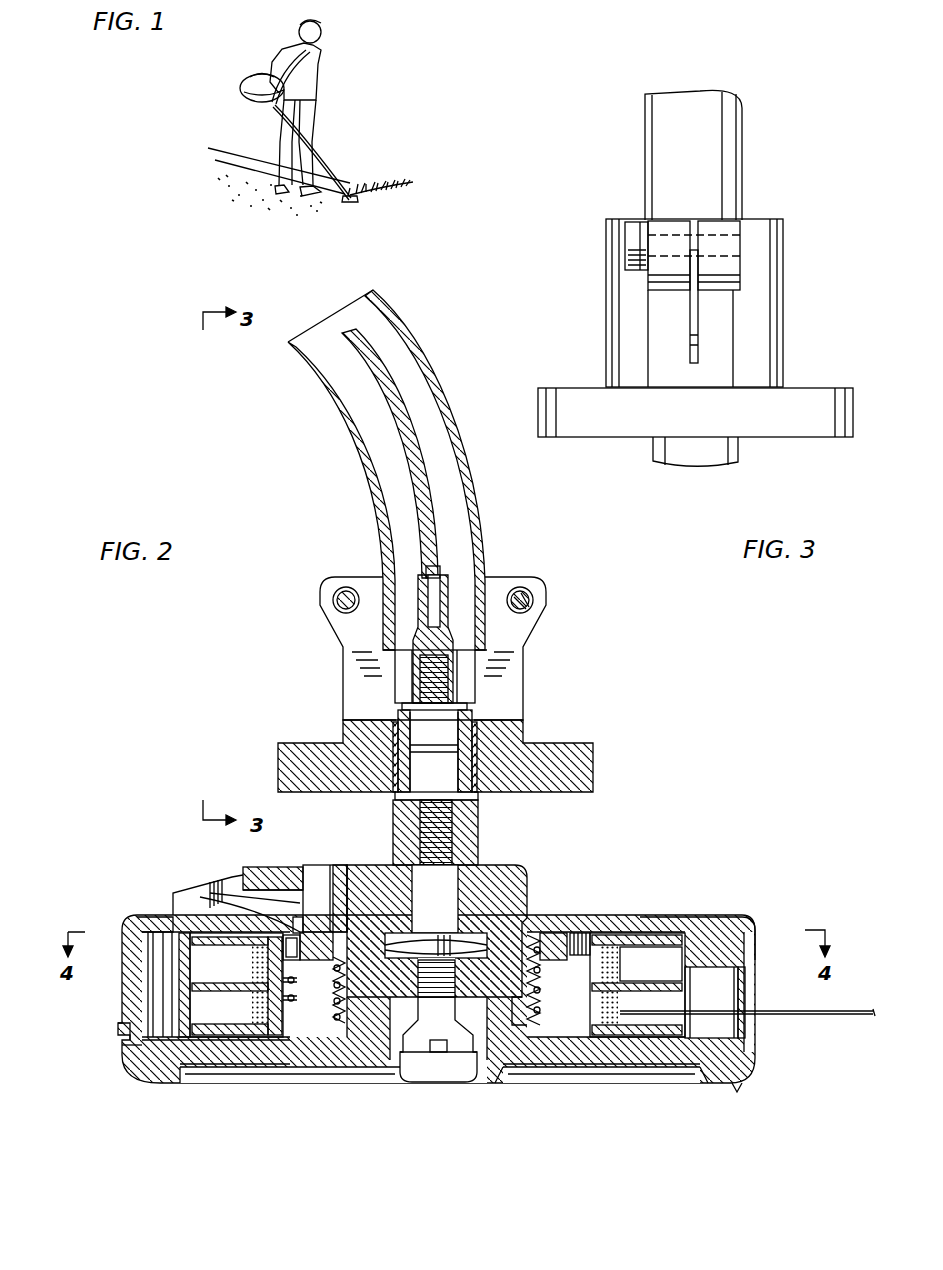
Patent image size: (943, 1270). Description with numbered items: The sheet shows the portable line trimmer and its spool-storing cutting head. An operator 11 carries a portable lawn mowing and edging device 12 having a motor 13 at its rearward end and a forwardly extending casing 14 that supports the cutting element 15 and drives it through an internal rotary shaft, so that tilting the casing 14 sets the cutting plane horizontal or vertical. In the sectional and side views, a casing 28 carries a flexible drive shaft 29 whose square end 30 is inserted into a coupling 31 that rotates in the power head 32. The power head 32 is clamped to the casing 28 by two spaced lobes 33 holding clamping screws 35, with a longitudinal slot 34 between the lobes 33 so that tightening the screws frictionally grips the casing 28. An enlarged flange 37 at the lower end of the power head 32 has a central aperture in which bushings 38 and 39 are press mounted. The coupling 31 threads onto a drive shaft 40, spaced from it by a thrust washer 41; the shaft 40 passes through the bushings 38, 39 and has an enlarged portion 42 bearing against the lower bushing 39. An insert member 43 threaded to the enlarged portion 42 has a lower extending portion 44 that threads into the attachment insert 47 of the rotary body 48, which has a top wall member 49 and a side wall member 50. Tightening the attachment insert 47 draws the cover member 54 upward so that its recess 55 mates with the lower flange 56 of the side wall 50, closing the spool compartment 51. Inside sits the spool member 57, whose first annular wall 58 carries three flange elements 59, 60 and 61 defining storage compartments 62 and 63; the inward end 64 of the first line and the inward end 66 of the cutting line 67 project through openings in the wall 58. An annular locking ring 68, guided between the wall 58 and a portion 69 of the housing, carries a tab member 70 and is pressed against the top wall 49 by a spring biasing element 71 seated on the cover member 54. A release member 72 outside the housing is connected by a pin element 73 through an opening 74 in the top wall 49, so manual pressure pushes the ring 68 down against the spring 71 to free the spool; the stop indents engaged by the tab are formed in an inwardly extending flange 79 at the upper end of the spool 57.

In FIG. 1, the operator 11 is at (330, 56).
In FIG. 1, the portable-type lawn mowing and edging device 12 is at (328, 139).
In FIG. 1, the motor 13 is at (248, 86).
In FIG. 1, the casing 14 is at (356, 176).
In FIG. 1, the cutting element 15 is at (352, 203).
In FIG. 3, the casing 28 is at (742, 176).
In FIG. 2, the casing 28 is at (437, 386).
In FIG. 2, the flexible drive shaft 29 is at (379, 378).
In FIG. 2, the square end 30 is at (441, 576).
In FIG. 2, the coupling 31 is at (449, 655).
In FIG. 3, the power head 32 is at (783, 365).
In FIG. 2, the power head 32 is at (522, 701).
In FIG. 3, the lobes 33 is at (714, 280).
In FIG. 2, the lobes 33 is at (333, 599).
In FIG. 3, the longitudinal slot 34 is at (690, 329).
In FIG. 2, the longitudinal slot 34 is at (356, 625).
In FIG. 3, the clamping screws 35 is at (625, 244).
In FIG. 2, the clamping screws 35 is at (529, 607).
In FIG. 3, the enlarged flange 37 is at (538, 424).
In FIG. 2, the enlarged flange 37 is at (576, 768).
In FIG. 2, the bushing 38 is at (472, 739).
In FIG. 2, the bushing 39 is at (400, 766).
In FIG. 2, the drive shaft 40 is at (428, 779).
In FIG. 2, the thrust washer 41 is at (401, 705).
In FIG. 3, the enlarged portion 42 is at (742, 453).
In FIG. 2, the enlarged portion 42 is at (479, 823).
In FIG. 2, the insert member 43 is at (440, 893).
In FIG. 2, the lower extending portion 44 is at (468, 946).
In FIG. 2, the attachment insert 47 is at (418, 1044).
In FIG. 2, the rotary body 48 is at (737, 1089).
In FIG. 2, the top wall member 49 is at (718, 913).
In FIG. 2, the side wall member 50 is at (122, 1001).
In FIG. 2, the spool compartment 51 is at (391, 1083).
In FIG. 2, the cover member 54 is at (218, 1050).
In FIG. 2, the recess 55 is at (118, 1028).
In FIG. 2, the lower flange 56 is at (124, 1045).
In FIG. 2, the spool member 57 is at (604, 937).
In FIG. 2, the first annular wall 58 is at (292, 1027).
In FIG. 2, the flange element 59 is at (623, 1028).
In FIG. 2, the flange element 60 is at (678, 983).
In FIG. 2, the flange element 61 is at (636, 939).
In FIG. 2, the storage compartment 62 is at (643, 963).
In FIG. 2, the storage compartment 63 is at (213, 1010).
In FIG. 2, the inward end 64 is at (296, 978).
In FIG. 2, the inward end 66 is at (298, 997).
In FIG. 2, the cutting line 67 is at (833, 1011).
In FIG. 2, the annular locking ring 68 is at (558, 958).
In FIG. 2, the portion 69 is at (374, 891).
In FIG. 2, the tab member 70 is at (170, 917).
In FIG. 2, the spring biasing element 71 is at (517, 1070).
In FIG. 2, the release member 72 is at (264, 880).
In FIG. 2, the pin element 73 is at (242, 889).
In FIG. 2, the opening 74 is at (258, 925).
In FIG. 2, the inwardly extending flange 79 is at (583, 937).